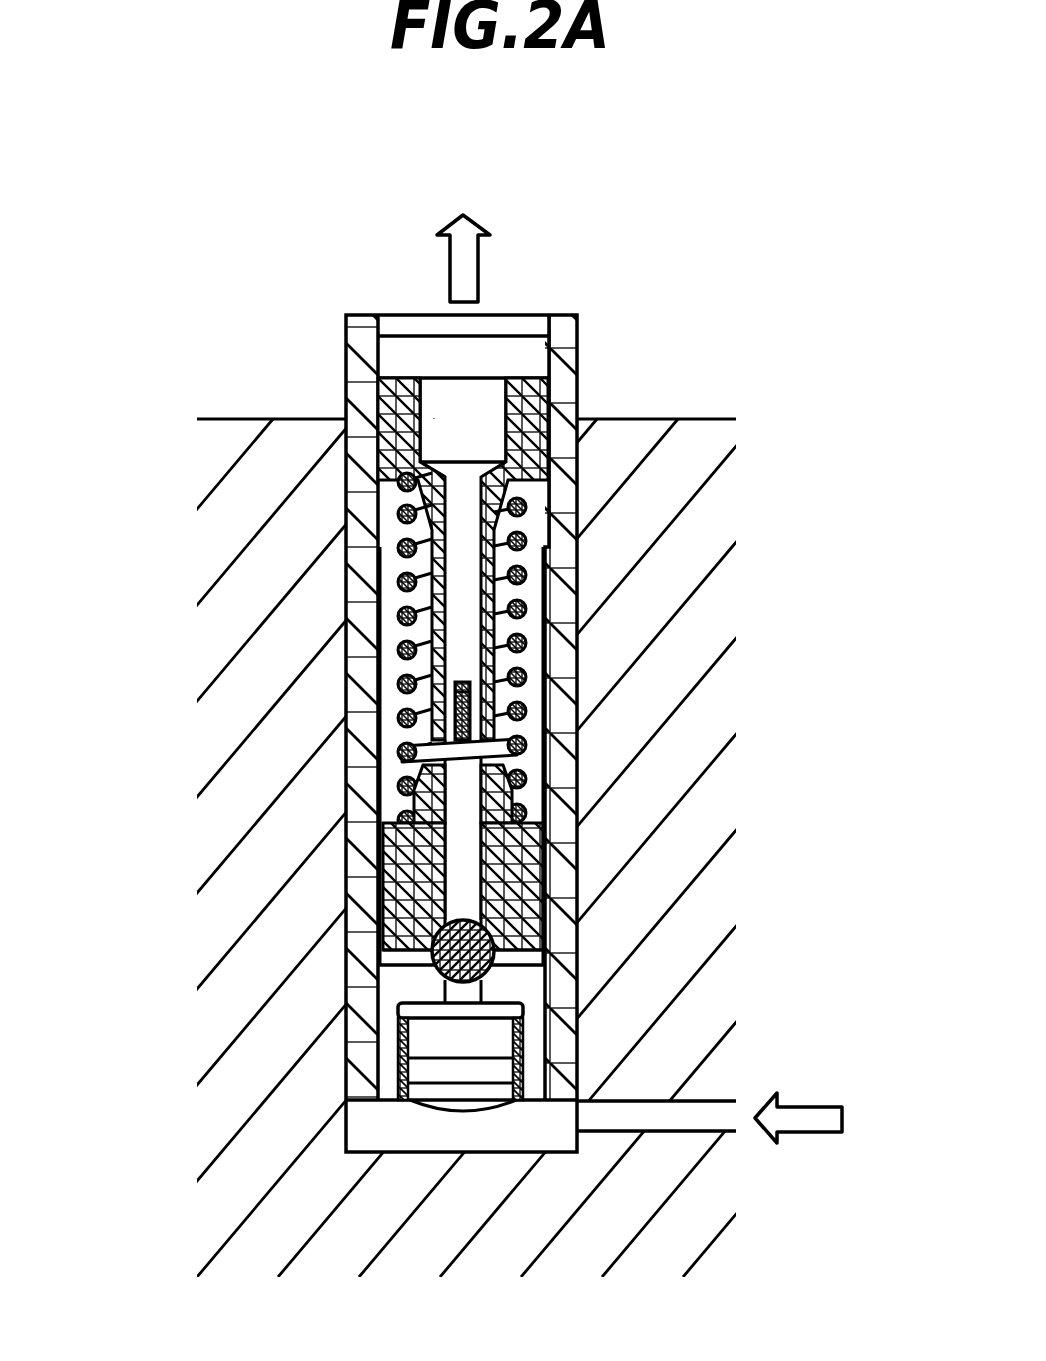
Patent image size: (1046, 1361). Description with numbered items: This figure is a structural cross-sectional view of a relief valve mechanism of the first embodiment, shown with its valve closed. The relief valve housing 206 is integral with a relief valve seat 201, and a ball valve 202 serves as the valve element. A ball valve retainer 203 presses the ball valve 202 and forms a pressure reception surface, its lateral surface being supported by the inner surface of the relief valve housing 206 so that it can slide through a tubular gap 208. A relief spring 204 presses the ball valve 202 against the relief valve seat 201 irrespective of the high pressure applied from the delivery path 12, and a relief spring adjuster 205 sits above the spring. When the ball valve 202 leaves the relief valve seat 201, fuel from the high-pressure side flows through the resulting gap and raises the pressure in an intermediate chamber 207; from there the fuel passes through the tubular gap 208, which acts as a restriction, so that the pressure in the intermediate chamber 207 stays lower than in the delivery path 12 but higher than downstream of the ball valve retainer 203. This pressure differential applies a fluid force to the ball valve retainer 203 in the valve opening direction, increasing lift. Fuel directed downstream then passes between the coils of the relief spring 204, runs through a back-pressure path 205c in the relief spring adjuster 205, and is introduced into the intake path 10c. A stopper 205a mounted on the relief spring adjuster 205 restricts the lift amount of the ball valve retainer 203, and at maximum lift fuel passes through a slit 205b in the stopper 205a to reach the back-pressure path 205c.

The intake path 10c is at (462, 236).
The delivery path 12 is at (735, 1118).
The relief valve seat 201 is at (482, 977).
The ball valve 202 is at (480, 947).
The ball valve retainer 203 is at (385, 824).
The relief spring 204 is at (444, 651).
The relief spring adjuster 205 is at (548, 404).
The stopper 205a is at (440, 730).
The slit 205b is at (442, 684).
The back-pressure path 205c is at (462, 500).
The relief valve housing 206 is at (560, 557).
The intermediate chamber 207 is at (398, 961).
The tubular gap 208 is at (380, 895).